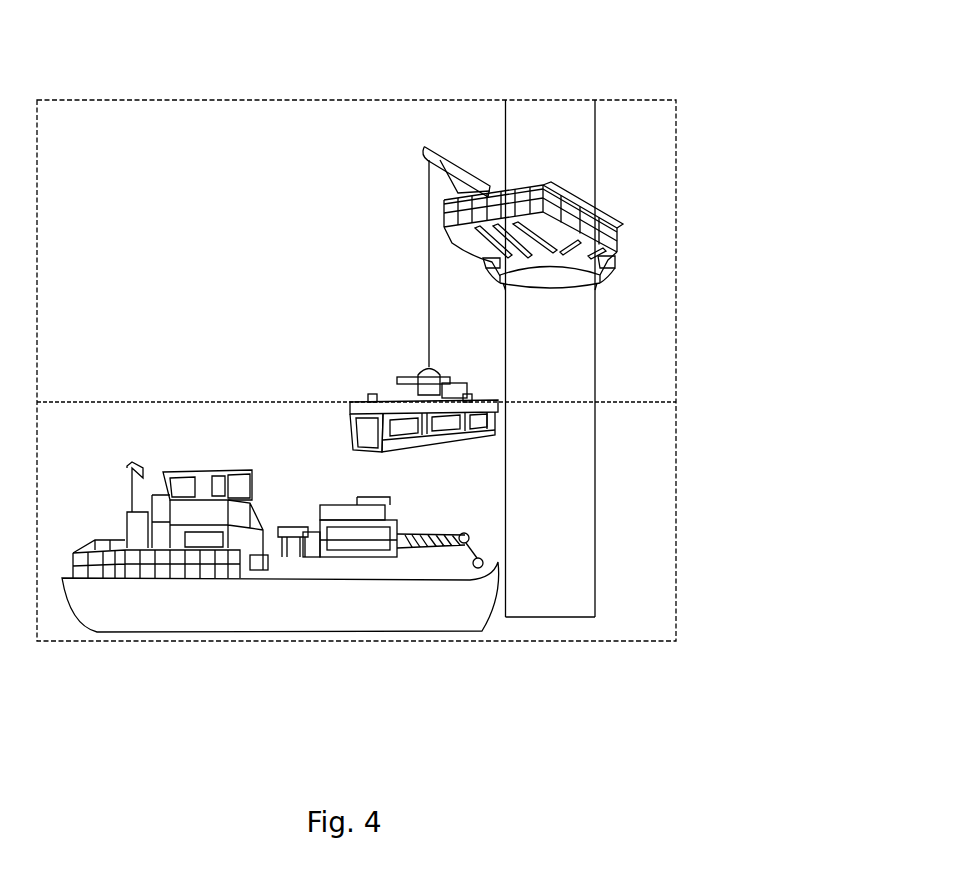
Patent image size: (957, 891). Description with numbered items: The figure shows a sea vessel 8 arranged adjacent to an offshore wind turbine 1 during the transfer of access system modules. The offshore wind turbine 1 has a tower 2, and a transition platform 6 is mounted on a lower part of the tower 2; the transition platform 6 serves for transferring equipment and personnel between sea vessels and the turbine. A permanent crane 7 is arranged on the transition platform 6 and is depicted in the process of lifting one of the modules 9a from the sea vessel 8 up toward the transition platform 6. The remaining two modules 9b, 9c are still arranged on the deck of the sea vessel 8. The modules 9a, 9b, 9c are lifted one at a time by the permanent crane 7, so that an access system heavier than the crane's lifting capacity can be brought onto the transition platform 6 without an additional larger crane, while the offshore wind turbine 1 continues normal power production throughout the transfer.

The offshore wind turbine 1 is at (628, 117).
The tower 2 is at (563, 417).
The transition platform 6 is at (567, 212).
The permanent crane 7 is at (450, 165).
The sea vessel 8 is at (197, 608).
The module 9a is at (405, 408).
The module 9b is at (320, 547).
The module 9c is at (437, 555).